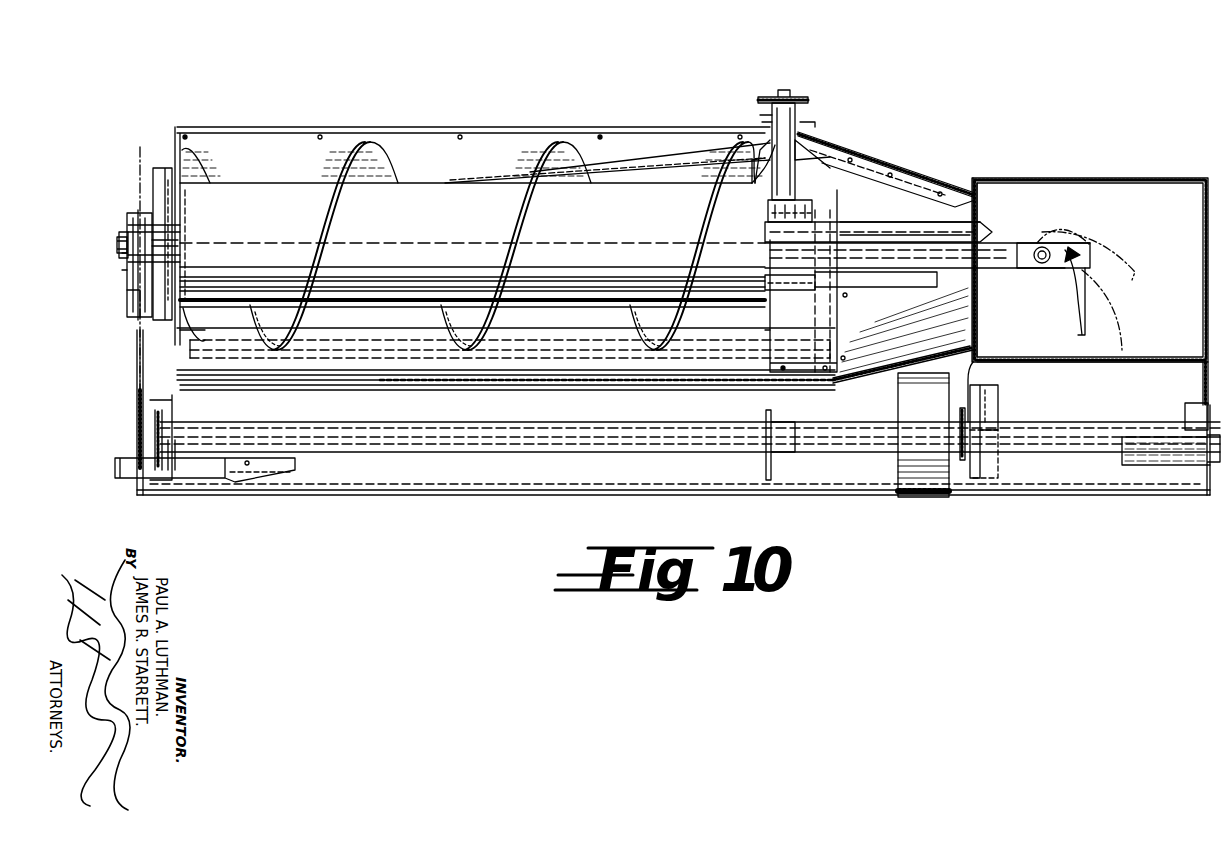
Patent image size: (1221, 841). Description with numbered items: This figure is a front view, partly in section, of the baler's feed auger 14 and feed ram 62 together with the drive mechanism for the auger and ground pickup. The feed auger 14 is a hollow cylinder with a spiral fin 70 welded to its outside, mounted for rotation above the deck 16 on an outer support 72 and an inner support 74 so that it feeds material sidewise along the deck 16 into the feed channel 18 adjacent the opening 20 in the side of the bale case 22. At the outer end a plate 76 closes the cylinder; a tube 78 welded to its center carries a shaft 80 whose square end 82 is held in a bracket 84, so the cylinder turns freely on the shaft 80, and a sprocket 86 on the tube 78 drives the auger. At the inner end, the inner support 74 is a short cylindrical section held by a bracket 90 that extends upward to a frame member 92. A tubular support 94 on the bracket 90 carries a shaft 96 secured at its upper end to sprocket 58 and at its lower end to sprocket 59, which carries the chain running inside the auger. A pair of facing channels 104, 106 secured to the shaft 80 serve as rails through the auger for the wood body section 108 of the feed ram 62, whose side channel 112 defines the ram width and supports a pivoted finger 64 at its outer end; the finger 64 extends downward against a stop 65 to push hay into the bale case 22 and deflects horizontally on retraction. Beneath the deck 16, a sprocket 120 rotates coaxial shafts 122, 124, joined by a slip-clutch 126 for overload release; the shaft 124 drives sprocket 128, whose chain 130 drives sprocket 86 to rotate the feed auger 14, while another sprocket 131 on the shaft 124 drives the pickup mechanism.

The feed auger 14 is at (440, 230).
The deck 16 is at (413, 368).
The feed channel 18 is at (908, 205).
The opening 20 is at (970, 188).
The bale case 22 is at (1120, 178).
The sprocket 58 is at (758, 103).
The sprocket 59 is at (800, 180).
The feed ram 62 is at (1007, 270).
The finger 64 is at (1080, 300).
The stop 65 is at (1052, 280).
The spiral fin 70 is at (580, 180).
The outer support 72 is at (123, 263).
The inner support 74 is at (812, 185).
The plate 76 is at (185, 215).
The tube 78 is at (148, 198).
The shaft 80 is at (117, 243).
The square end 82 is at (127, 235).
The bracket 84 is at (131, 213).
The sprocket 86 is at (138, 210).
The bracket 90 is at (742, 148).
The frame member 92 is at (716, 114).
The tubular support 94 is at (798, 122).
The shaft 96 is at (783, 90).
The channel 104 is at (810, 230).
The channel 106 is at (785, 290).
The body section 108 is at (905, 288).
The channel 112 is at (1000, 248).
The sprocket 120 is at (962, 462).
The shaft 122 is at (985, 447).
The shaft 124 is at (845, 447).
The slip-clutch 126 is at (930, 478).
The sprocket 128 is at (136, 408).
The chain 130 is at (137, 353).
The sprocket 131 is at (170, 408).